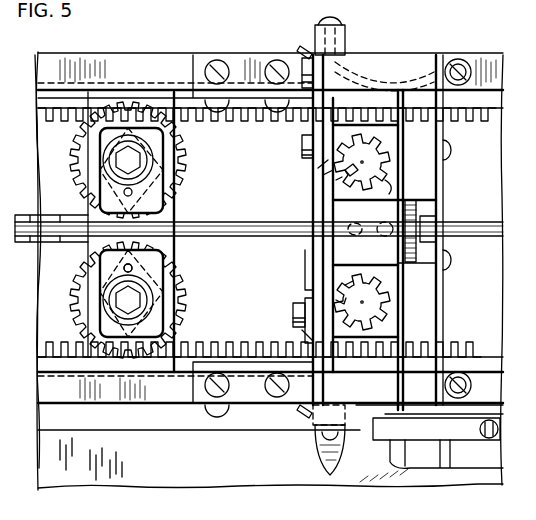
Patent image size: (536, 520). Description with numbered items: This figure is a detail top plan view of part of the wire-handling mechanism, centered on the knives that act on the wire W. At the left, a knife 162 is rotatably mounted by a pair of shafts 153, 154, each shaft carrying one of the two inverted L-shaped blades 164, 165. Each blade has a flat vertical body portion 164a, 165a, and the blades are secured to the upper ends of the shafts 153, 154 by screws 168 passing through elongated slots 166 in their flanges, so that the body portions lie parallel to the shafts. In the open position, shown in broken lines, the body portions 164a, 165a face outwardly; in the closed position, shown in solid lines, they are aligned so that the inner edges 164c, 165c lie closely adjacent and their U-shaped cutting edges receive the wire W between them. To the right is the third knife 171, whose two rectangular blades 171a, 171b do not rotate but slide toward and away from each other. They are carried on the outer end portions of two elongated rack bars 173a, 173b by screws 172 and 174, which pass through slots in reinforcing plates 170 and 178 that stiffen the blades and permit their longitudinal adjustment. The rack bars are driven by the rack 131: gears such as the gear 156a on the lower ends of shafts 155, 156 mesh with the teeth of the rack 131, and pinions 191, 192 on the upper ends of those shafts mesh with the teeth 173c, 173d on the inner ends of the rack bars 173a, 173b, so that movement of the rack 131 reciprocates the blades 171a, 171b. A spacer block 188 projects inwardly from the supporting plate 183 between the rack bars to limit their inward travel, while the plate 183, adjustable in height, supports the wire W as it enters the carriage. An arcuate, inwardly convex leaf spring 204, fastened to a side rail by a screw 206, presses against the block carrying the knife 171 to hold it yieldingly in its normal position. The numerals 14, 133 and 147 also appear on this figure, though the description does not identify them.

The machine frame 14 is at (518, 270).
The rack 131 is at (62, 103).
The lower frame wall 133 is at (62, 349).
The shaft collar 147 is at (383, 238).
The shaft 153 is at (178, 288).
The shaft 154 is at (178, 155).
The shaft 155 is at (345, 303).
The shaft 156 is at (336, 182).
The gear 156a is at (340, 172).
The knife 162 is at (152, 84).
The blade 164 is at (137, 358).
The body portion 164a is at (133, 354).
The inner edge 164c is at (140, 354).
The blade 165 is at (148, 105).
The body portion 165a is at (112, 107).
The inner edge 165c is at (150, 112).
The elongated slot 166 is at (124, 268).
The screw 168 is at (178, 172).
The reinforcing plate 170 is at (302, 137).
The third knife 171 is at (358, 60).
The blade 171a is at (316, 262).
The blade 171b is at (318, 168).
The screw 172 is at (305, 78).
The rack bar 173a is at (390, 318).
The rack bar 173b is at (392, 139).
The teeth 173c is at (372, 266).
The teeth 173d is at (387, 200).
The screw 174 is at (293, 311).
The reinforcing plate 178 is at (302, 332).
The supporting plate 183 is at (445, 262).
The spacer block 188 is at (432, 213).
The pinion 191 is at (345, 285).
The pinion 192 is at (355, 182).
The leaf spring 204 is at (474, 80).
The screw 206 is at (463, 64).
The wire W is at (484, 228).